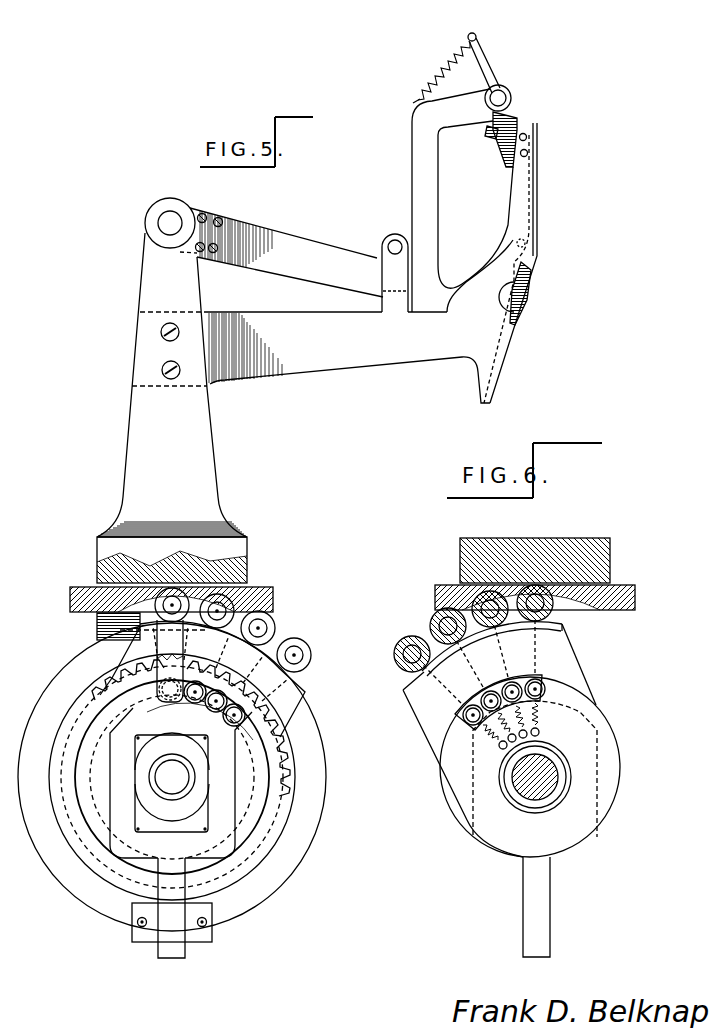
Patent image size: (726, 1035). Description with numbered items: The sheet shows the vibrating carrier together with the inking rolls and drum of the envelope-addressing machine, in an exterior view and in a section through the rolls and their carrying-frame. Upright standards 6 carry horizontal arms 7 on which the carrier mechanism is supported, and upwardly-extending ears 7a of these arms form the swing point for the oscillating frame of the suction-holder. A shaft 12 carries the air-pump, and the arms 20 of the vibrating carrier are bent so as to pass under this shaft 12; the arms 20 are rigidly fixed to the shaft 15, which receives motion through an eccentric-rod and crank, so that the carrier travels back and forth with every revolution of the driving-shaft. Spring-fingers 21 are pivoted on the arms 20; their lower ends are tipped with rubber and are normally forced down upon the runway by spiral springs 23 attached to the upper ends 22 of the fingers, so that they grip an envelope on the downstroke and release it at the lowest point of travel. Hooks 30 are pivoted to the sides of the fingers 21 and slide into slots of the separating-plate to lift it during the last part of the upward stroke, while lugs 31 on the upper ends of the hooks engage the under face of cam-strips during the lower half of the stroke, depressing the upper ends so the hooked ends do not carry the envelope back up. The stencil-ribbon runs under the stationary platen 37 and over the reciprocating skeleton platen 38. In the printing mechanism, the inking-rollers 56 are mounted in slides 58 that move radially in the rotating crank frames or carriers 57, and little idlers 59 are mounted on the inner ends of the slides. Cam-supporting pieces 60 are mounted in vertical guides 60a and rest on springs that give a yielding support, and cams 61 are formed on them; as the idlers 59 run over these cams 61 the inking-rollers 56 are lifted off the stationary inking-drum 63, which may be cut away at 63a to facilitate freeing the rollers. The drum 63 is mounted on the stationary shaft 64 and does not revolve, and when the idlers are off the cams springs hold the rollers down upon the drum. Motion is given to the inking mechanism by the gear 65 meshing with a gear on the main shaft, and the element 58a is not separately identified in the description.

In FIG. 5, the upright standards 6 is at (172, 385).
In FIG. 5, the horizontal arms 7 is at (311, 305).
In FIG. 5, the upwardly-extending ears 7a is at (527, 263).
In FIG. 5, the shaft 12 is at (395, 240).
In FIG. 5, the shaft 15 is at (168, 222).
In FIG. 5, the arms of the vibrating carrier 20 is at (430, 195).
In FIG. 5, the spring-fingers 21 is at (517, 112).
In FIG. 5, the upper ends of the fingers 22 is at (490, 63).
In FIG. 5, the spiral springs 23 is at (440, 72).
In FIG. 5, the hooks 30 is at (530, 305).
In FIG. 5, the lugs 31 is at (492, 141).
In FIG. 5, the stationary platen 37 is at (115, 576).
In FIG. 6, the stationary platen 37 is at (470, 552).
In FIG. 5, the reciprocating skeleton platen 38 is at (70, 597).
In FIG. 6, the reciprocating skeleton platen 38 is at (435, 591).
In FIG. 5, the inking-rollers 56 is at (273, 621).
In FIG. 6, the inking-rollers 56 is at (554, 604).
In FIG. 6, the rotating crank frames 57 is at (425, 725).
In FIG. 5, the slides 58 is at (263, 683).
In FIG. 6, the bearing segment 58a is at (499, 684).
In FIG. 5, the idlers 59 is at (233, 727).
In FIG. 6, the idlers 59 is at (470, 722).
In FIG. 5, the cam-supporting pieces 60 is at (180, 833).
In FIG. 6, the cam-supporting pieces 60 is at (580, 852).
In FIG. 5, the vertical guides 60a is at (206, 938).
In FIG. 5, the cams 61 is at (112, 722).
In FIG. 6, the cams 61 is at (577, 722).
In FIG. 5, the stationary inking-drum 63 is at (280, 867).
In FIG. 5, the cut-away portion of the drum 63a is at (97, 627).
In FIG. 5, the stationary shaft 64 is at (172, 777).
In FIG. 6, the stationary shaft 64 is at (520, 800).
In FIG. 5, the gear 65 is at (110, 683).